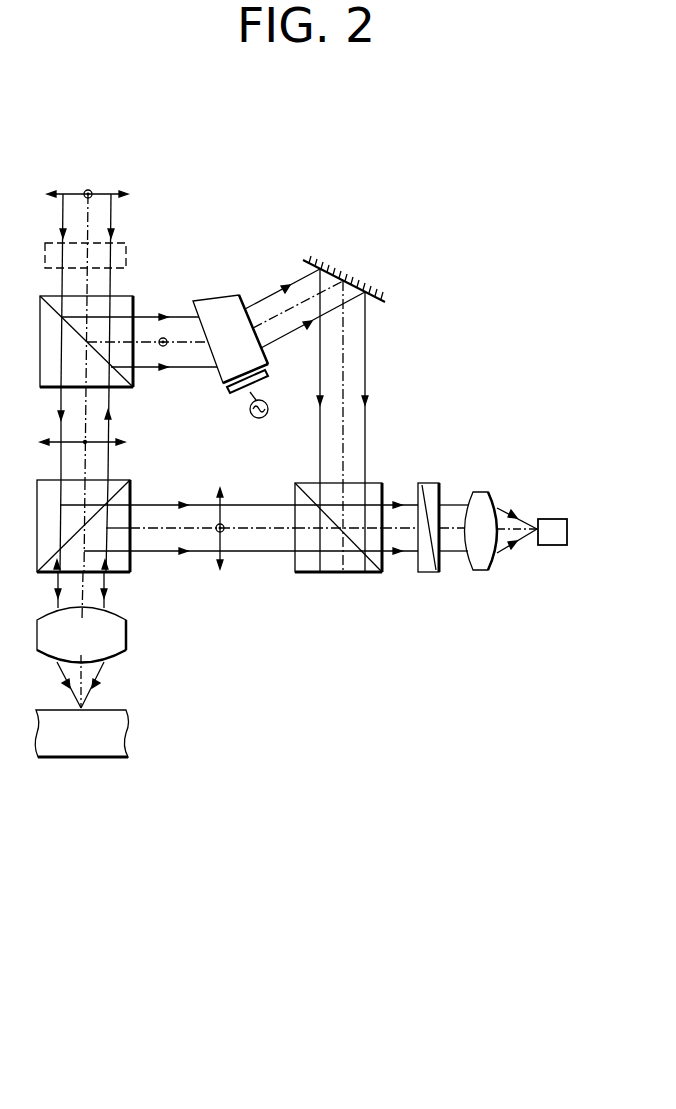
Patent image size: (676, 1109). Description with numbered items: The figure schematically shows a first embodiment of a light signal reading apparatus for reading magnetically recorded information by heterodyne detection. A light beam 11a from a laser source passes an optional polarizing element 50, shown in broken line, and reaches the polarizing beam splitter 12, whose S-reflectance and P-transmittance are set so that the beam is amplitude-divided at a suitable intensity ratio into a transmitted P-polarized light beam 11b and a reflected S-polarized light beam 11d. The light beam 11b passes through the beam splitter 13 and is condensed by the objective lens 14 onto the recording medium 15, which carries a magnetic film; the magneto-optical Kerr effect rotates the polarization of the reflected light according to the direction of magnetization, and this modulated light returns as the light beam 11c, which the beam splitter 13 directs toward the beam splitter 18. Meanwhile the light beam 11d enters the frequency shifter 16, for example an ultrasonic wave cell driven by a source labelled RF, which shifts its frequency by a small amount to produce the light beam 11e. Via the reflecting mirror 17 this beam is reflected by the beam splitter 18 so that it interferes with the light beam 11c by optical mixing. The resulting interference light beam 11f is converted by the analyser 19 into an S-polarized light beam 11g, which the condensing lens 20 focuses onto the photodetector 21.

The light beam 11a is at (112, 213).
The P-polarized light beam 11b is at (110, 411).
The light beam 11c is at (255, 552).
The S-polarized light beam 11d is at (197, 368).
The light beam 11e is at (290, 334).
The light beam 11f is at (391, 553).
The S-polarized light beam 11g is at (455, 553).
The polarizing beam splitter 12 is at (133, 296).
The beam splitter 13 is at (130, 480).
The objective lens 14 is at (126, 631).
The recording medium 15 is at (128, 730).
The frequency shifter 16 is at (218, 298).
The reflecting mirror 17 is at (350, 290).
The beam splitter 18 is at (382, 483).
The analyser 19 is at (431, 483).
The condensing lens 20 is at (488, 492).
The photodetector 21 is at (552, 519).
The polarizing element 50 is at (126, 256).
The RF oscillator RF is at (259, 418).